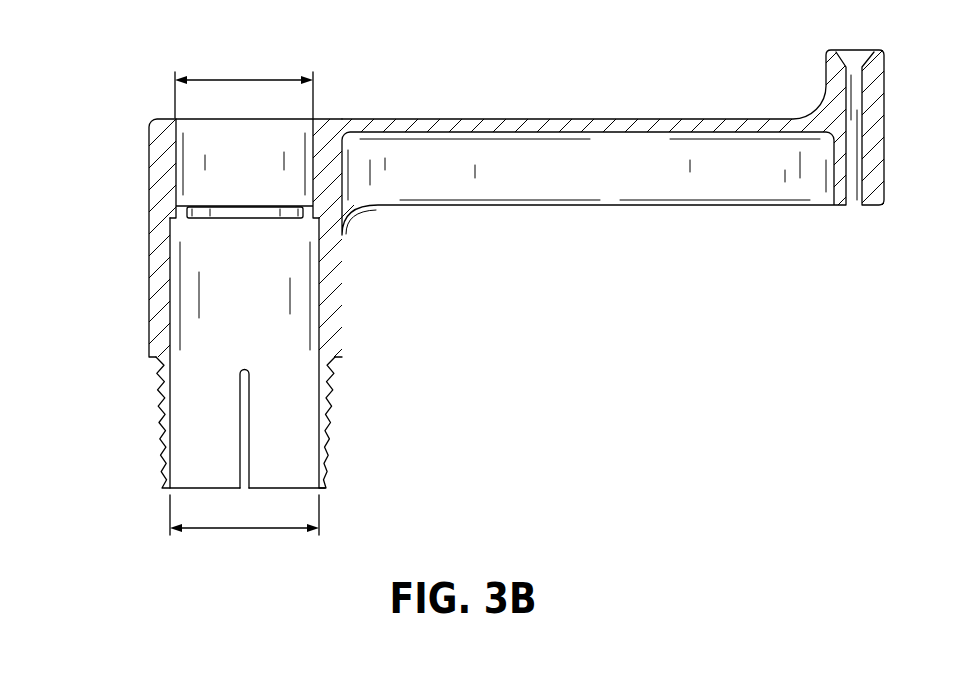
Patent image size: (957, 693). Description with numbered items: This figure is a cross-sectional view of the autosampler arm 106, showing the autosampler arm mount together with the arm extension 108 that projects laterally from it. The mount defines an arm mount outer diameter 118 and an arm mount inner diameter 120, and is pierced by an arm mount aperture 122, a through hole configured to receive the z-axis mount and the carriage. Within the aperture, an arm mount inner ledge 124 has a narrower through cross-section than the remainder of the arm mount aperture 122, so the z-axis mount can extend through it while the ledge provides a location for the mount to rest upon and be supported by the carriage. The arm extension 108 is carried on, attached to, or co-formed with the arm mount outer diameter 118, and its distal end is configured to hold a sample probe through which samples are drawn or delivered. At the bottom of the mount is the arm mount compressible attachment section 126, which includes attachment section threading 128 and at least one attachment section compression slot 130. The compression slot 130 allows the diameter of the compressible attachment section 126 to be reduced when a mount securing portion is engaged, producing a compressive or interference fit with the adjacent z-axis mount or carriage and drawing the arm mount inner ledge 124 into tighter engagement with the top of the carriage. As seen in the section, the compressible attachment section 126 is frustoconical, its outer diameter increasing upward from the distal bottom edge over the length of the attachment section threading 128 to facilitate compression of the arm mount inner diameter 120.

The autosampler arm 106 is at (695, 52).
The arm extension 108 is at (493, 118).
The arm mount outer diameter 118 is at (244, 85).
The arm mount inner diameter 120 is at (244, 529).
The arm mount aperture 122 is at (192, 173).
The arm mount inner ledge 124 is at (175, 231).
The arm mount compressible attachment section 126 is at (132, 385).
The attachment section threading 128 is at (332, 411).
The attachment section compression slot 130 is at (245, 462).